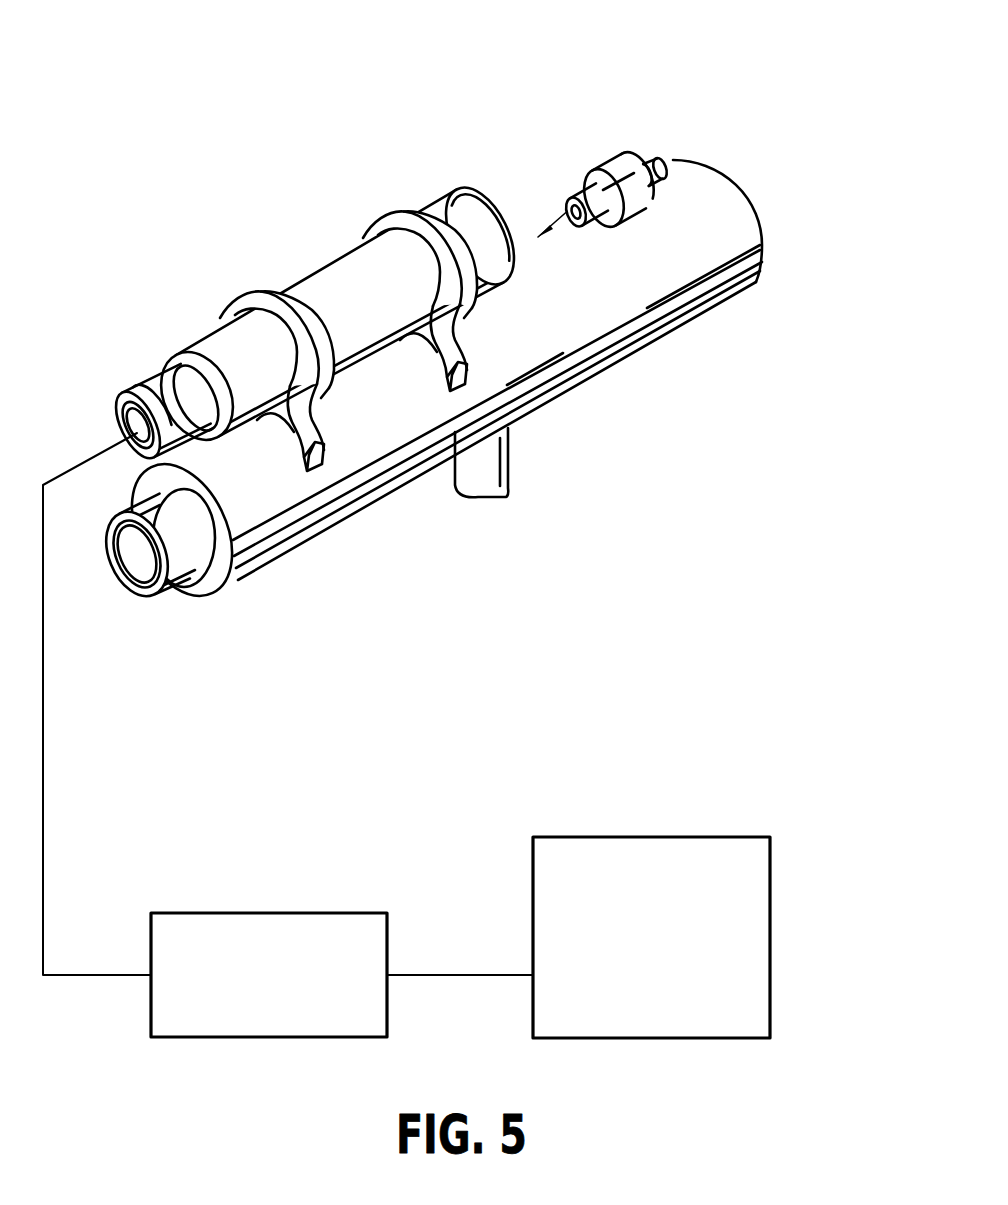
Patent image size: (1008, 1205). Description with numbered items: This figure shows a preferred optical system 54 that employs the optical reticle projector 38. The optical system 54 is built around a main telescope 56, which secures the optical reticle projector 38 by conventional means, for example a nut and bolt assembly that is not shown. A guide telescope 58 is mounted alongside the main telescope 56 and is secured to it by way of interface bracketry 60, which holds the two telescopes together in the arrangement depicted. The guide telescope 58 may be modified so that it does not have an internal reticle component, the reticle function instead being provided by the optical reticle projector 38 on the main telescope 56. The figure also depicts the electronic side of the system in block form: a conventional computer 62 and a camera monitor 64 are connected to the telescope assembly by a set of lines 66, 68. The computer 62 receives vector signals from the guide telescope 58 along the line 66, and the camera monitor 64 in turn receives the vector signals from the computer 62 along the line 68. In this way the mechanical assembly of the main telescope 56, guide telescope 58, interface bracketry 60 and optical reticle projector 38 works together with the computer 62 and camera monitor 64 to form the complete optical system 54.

The optical reticle projector 38 is at (636, 150).
The optical system 54 is at (756, 176).
The main telescope 56 is at (578, 387).
The guide telescope 58 is at (328, 264).
The interface bracketry 60 is at (386, 213).
The computer 62 is at (283, 913).
The camera monitor 64 is at (680, 837).
The line 66 is at (43, 759).
The line 68 is at (487, 975).